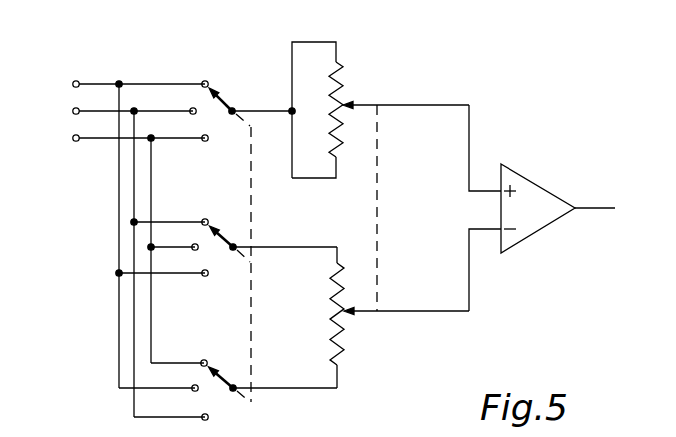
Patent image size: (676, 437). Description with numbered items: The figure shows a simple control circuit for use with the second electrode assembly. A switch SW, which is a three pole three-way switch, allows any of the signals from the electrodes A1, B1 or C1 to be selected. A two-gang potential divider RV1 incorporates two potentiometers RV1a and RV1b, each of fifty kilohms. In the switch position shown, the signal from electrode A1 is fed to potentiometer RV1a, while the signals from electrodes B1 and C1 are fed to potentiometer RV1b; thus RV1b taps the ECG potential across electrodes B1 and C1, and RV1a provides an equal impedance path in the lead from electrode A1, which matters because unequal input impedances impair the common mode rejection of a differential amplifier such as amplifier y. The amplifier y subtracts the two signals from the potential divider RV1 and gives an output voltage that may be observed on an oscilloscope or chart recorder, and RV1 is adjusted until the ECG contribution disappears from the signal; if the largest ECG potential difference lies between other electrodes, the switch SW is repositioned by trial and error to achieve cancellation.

The electrode A1 is at (121, 232).
The electrode B1 is at (122, 260).
The electrode C1 is at (122, 247).
The switch SW is at (250, 163).
The potentiometer RV1a is at (346, 86).
The potentiometer RV1b is at (349, 345).
The two-gang potential divider RV1 is at (378, 170).
The amplifier y is at (542, 208).